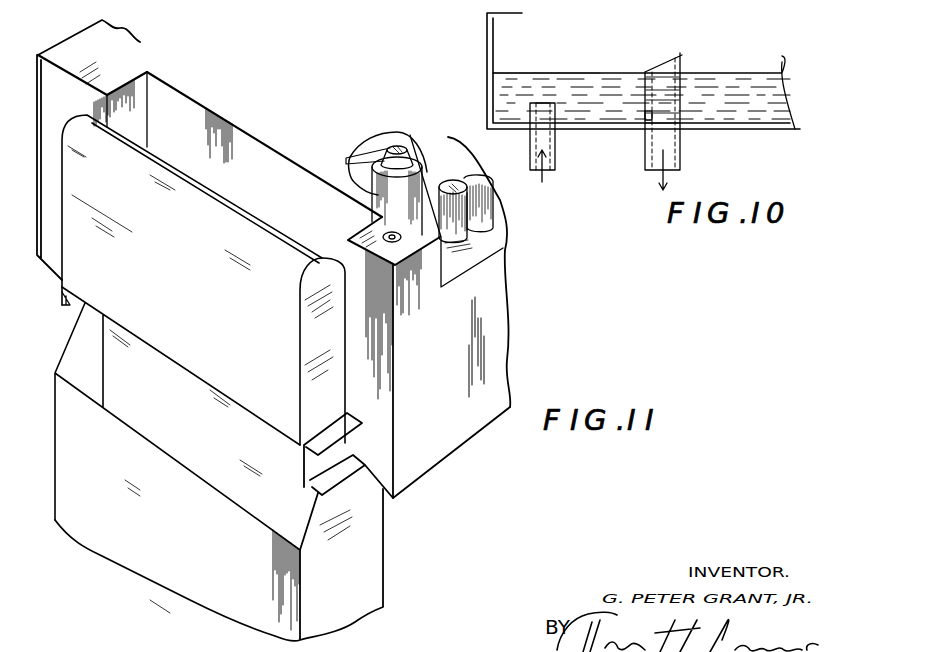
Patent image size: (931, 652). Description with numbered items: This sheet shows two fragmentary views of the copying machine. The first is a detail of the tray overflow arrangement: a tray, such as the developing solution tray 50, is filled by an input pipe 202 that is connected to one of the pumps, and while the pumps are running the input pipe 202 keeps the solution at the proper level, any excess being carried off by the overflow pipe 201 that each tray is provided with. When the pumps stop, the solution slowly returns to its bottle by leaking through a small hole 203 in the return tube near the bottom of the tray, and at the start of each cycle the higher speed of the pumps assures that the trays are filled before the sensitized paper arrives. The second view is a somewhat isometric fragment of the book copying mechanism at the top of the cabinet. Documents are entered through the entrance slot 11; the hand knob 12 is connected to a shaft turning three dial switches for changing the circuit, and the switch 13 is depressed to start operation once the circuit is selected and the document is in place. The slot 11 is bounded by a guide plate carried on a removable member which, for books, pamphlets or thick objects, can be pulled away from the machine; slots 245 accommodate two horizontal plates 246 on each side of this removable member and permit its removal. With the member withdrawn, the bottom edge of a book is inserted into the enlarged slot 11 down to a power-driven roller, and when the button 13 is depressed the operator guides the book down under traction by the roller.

In FIG. 11, the entrance slot 11 is at (265, 151).
In FIG. 11, the hand knob 12 is at (400, 147).
In FIG. 11, the switch 13 is at (385, 234).
In FIG. 10, the developing solution tray 50 is at (612, 66).
In FIG. 10, the overflow pipe 201 is at (682, 55).
In FIG. 10, the input pipe 202 is at (555, 146).
In FIG. 10, the small hole 203 is at (646, 120).
In FIG. 11, the slots 245 is at (363, 455).
In FIG. 11, the horizontal plates 246 is at (60, 303).